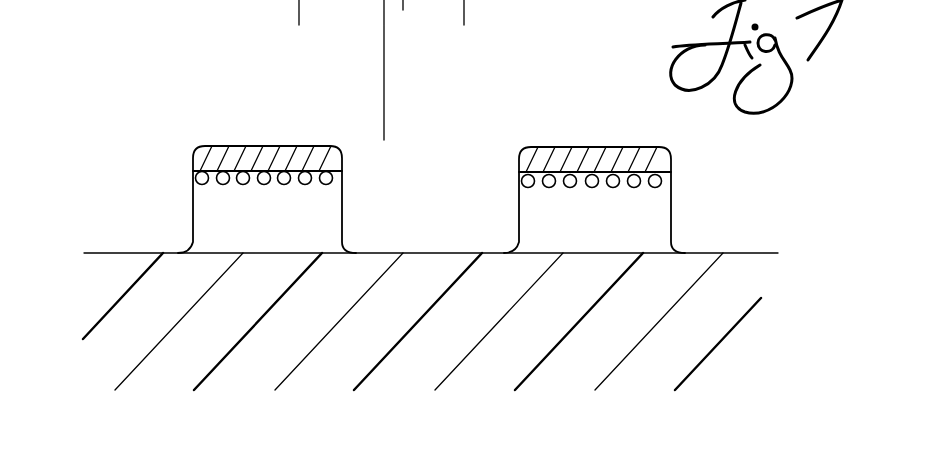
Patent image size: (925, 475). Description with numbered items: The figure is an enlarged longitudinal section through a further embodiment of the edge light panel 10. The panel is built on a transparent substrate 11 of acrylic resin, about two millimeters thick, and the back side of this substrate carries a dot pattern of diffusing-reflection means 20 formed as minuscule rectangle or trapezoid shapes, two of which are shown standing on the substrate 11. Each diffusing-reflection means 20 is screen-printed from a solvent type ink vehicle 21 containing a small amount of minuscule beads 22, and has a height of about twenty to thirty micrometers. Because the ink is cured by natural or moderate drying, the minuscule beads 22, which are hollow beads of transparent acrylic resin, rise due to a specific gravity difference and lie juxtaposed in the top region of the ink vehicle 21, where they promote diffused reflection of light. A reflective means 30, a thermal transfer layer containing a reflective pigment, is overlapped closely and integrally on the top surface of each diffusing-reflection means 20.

The edge light panel 10 is at (730, 230).
The transparent substrate 11 is at (537, 0).
The diffusing-reflection means 20 is at (102, 148).
The solvent type ink vehicle 21 is at (212, 218).
The minuscule beads 22 is at (197, 176).
The reflective means 30 is at (268, 146).